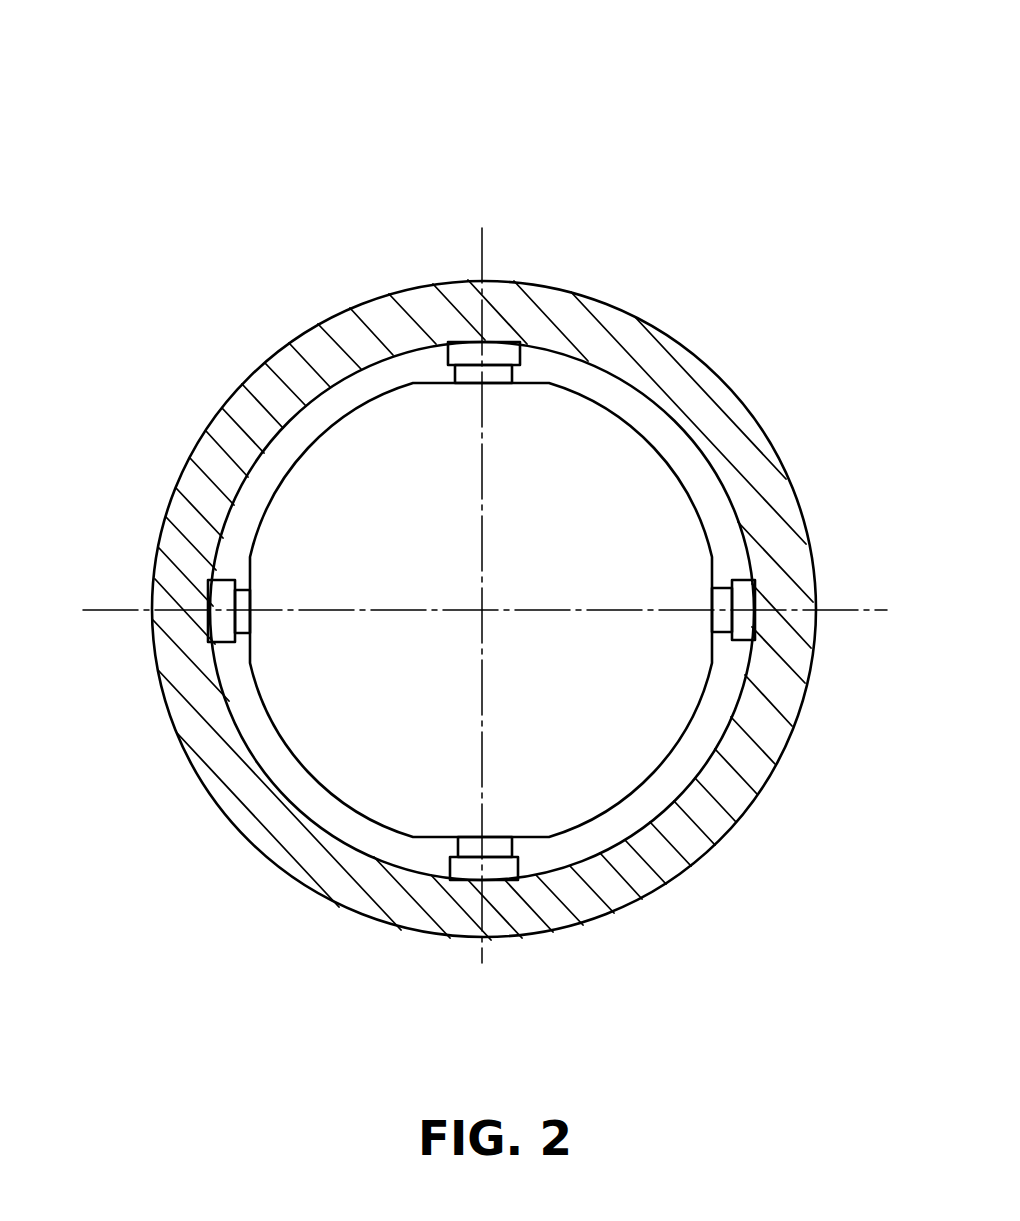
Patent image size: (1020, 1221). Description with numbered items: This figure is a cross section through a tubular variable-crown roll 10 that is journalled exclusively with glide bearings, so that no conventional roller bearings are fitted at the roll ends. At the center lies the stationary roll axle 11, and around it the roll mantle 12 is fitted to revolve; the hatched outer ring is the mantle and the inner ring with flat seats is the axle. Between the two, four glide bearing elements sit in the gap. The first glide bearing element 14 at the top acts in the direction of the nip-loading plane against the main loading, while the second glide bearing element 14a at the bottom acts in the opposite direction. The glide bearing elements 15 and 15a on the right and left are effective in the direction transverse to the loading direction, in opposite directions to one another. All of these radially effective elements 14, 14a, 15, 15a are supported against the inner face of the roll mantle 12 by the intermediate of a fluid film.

The roll 10 is at (607, 137).
The stationary roll axle 11 is at (642, 468).
The roll mantle 12 is at (253, 396).
The first glide bearing element 14 is at (498, 355).
The second glide bearing element 14a is at (493, 870).
The glide bearing element 15 is at (743, 598).
The glide bearing element 15a is at (212, 603).